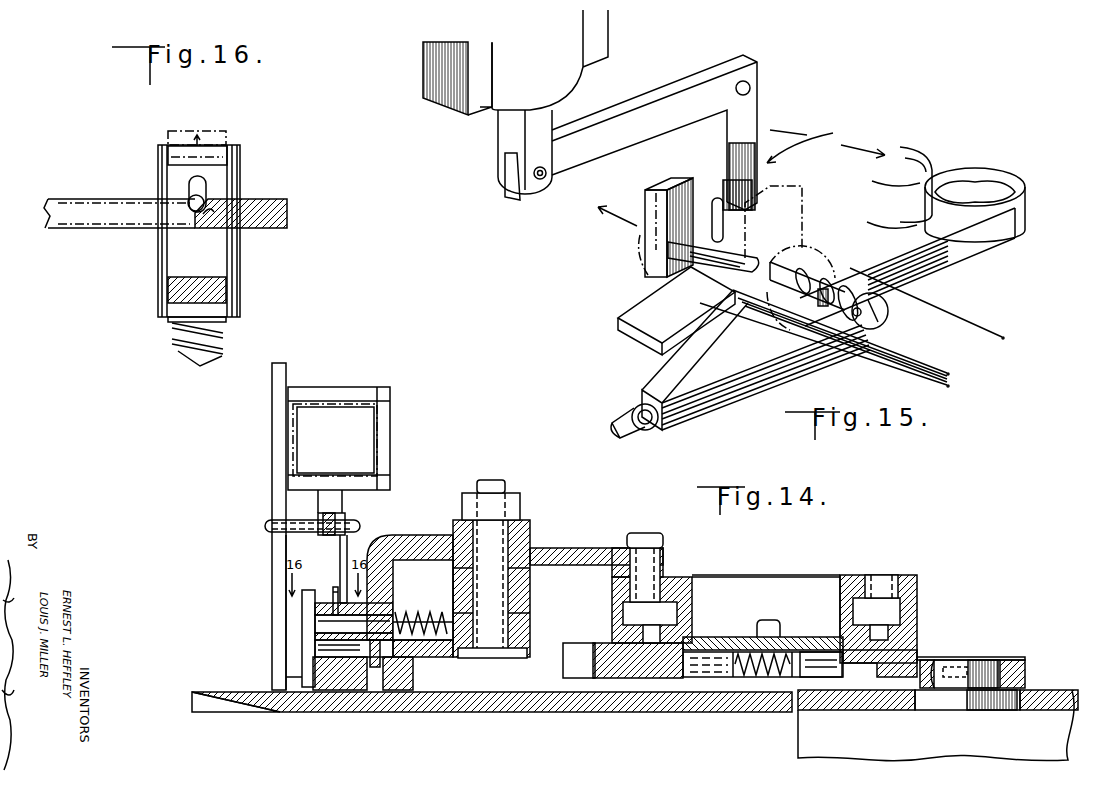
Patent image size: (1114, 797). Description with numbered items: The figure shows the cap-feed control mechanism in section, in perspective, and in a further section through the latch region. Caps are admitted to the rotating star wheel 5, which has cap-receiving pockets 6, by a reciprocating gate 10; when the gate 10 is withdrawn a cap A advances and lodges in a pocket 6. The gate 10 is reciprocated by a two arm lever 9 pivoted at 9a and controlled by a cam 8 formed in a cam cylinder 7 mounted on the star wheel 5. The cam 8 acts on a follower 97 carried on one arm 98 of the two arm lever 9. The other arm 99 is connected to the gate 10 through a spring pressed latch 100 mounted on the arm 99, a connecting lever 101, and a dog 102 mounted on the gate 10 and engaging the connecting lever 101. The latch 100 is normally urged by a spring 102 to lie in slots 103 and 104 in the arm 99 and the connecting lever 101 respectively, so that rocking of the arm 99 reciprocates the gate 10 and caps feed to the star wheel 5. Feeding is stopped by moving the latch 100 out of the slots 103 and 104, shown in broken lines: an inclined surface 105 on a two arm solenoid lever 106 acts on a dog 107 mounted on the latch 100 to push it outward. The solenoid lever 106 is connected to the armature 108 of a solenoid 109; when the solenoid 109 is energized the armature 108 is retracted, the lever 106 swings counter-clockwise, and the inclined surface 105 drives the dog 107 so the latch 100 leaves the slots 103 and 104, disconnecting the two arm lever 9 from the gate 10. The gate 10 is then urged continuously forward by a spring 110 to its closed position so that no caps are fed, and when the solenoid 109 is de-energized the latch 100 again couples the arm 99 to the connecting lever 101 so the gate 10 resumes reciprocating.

In FIG. 14, the star wheel 5 is at (924, 663).
In FIG. 14, the cap-receiving pocket 6 is at (572, 670).
In FIG. 14, the cam cylinder 7 is at (915, 583).
In FIG. 14, the cam 8 is at (878, 590).
In FIG. 14, the two arm lever 9 is at (572, 521).
In FIG. 14, the pivot 9a is at (505, 489).
In FIG. 15, the gate 10 is at (988, 241).
In FIG. 14, the gate 10 is at (384, 679).
In FIG. 14, the follower 97 is at (664, 580).
In FIG. 14, the arm 98 is at (597, 547).
In FIG. 16, the arm 99 is at (237, 251).
In FIG. 15, the arm 99 is at (790, 246).
In FIG. 14, the arm 99 is at (383, 590).
In FIG. 16, the spring pressed latch 100 is at (226, 158).
In FIG. 15, the spring pressed latch 100 is at (648, 201).
In FIG. 14, the spring pressed latch 100 is at (302, 621).
In FIG. 15, the connecting lever 101 is at (622, 306).
In FIG. 14, the connecting lever 101 is at (318, 658).
In FIG. 16, the spring 102 is at (223, 349).
In FIG. 15, the spring 102 is at (830, 283).
In FIG. 14, the spring 102 is at (343, 688).
In FIG. 16, the slot 103 is at (222, 172).
In FIG. 15, the slot 103 is at (656, 193).
In FIG. 14, the slot 103 is at (313, 607).
In FIG. 15, the slot 104 is at (669, 281).
In FIG. 14, the slot 104 is at (318, 648).
In FIG. 16, the inclined surface 105 is at (211, 226).
In FIG. 15, the inclined surface 105 is at (718, 196).
In FIG. 14, the inclined surface 105 is at (336, 586).
In FIG. 16, the two arm solenoid lever 106 is at (288, 213).
In FIG. 15, the two arm solenoid lever 106 is at (654, 132).
In FIG. 14, the two arm solenoid lever 106 is at (345, 545).
In FIG. 16, the dog 107 is at (192, 200).
In FIG. 15, the dog 107 is at (662, 243).
In FIG. 14, the dog 107 is at (334, 593).
In FIG. 15, the armature 108 is at (512, 139).
In FIG. 14, the armature 108 is at (338, 501).
In FIG. 15, the solenoid 109 is at (563, 100).
In FIG. 14, the solenoid 109 is at (364, 437).
In FIG. 15, the spring 110 is at (626, 407).
In FIG. 15, the cap A is at (1012, 175).